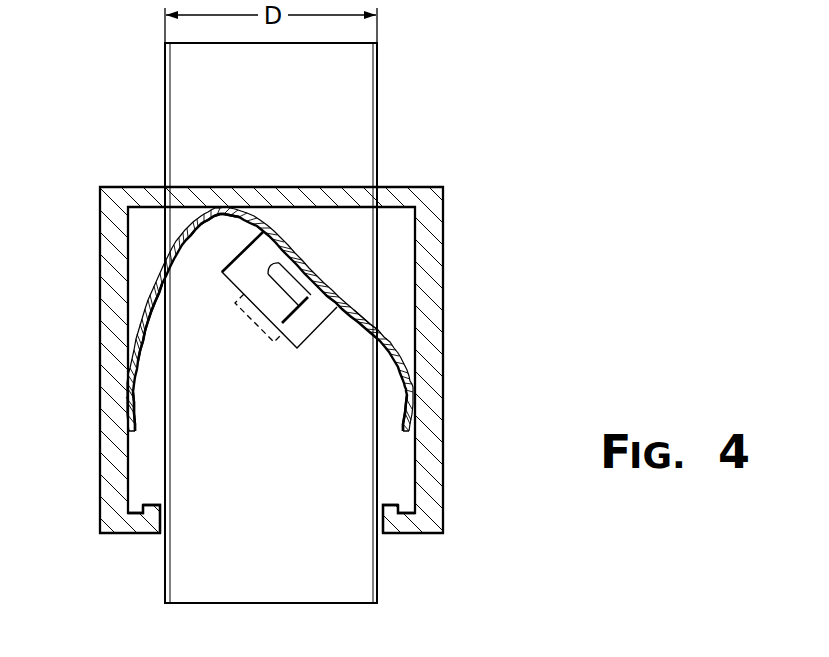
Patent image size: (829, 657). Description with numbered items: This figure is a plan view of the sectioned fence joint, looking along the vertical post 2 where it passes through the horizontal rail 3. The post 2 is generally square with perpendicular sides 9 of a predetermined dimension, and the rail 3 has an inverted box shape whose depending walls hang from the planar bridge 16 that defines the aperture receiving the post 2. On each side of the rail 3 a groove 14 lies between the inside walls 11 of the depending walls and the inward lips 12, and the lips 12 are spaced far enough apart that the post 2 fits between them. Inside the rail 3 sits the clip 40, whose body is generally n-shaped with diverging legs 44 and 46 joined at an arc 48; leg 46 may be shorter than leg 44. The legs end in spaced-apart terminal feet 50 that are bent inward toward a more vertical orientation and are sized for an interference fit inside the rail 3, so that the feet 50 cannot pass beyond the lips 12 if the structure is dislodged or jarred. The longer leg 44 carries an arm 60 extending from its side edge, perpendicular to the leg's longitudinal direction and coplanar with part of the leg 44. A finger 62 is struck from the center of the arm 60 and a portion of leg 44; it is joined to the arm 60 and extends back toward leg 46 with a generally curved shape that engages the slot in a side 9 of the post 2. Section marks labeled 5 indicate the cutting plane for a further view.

The post 2 is at (154, 113).
The horizontal rail 3 is at (449, 430).
The section line 5 is at (432, 140).
The sides 9 is at (264, 122).
The inside walls 11 is at (416, 279).
The lips 12 is at (153, 520).
The groove 14 is at (128, 518).
The bridge 16 is at (413, 187).
The clip 40 is at (395, 356).
The leg 44 is at (370, 300).
The leg 46 is at (137, 352).
The arc 48 is at (187, 225).
The terminal feet 50 is at (140, 412).
The arm 60 is at (266, 264).
The finger 62 is at (308, 304).